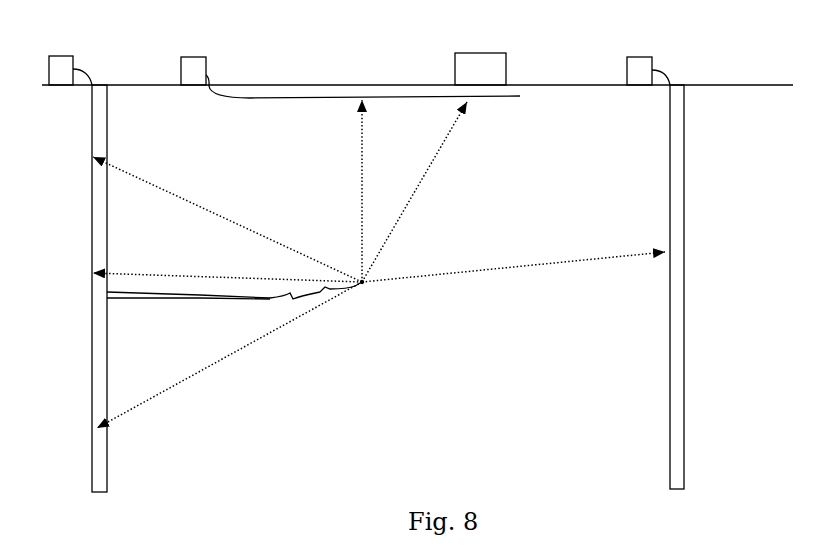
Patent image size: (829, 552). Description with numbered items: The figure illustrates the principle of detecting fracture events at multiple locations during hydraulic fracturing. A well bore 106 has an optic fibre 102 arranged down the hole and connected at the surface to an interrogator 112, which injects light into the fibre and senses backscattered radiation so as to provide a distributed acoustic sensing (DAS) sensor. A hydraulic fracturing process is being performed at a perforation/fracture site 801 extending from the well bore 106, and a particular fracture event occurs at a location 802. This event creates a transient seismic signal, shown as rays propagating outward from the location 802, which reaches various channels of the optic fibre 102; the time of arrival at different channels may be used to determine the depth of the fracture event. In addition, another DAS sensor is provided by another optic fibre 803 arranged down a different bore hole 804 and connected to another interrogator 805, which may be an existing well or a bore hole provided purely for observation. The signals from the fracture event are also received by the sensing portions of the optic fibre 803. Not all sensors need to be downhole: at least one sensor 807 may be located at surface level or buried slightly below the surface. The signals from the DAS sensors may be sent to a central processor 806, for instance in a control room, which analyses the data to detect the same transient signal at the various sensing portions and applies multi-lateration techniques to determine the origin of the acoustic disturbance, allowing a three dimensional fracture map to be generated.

The interrogator 112 is at (58, 56).
The optic fibre 102 is at (88, 71).
The sensor 807 is at (214, 65).
The central processor 806 is at (455, 63).
The interrogator 805 is at (627, 58).
The optic fibre 803 is at (668, 75).
The bore hole 804 is at (683, 172).
The well bore 106 is at (92, 400).
The perforation/fracture site 801 is at (167, 300).
The fracture event location 802 is at (368, 288).